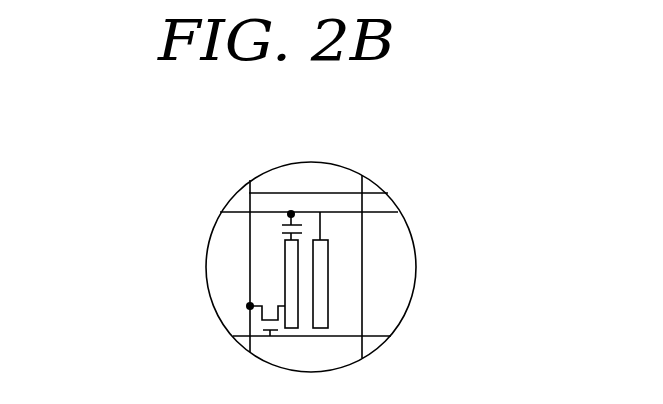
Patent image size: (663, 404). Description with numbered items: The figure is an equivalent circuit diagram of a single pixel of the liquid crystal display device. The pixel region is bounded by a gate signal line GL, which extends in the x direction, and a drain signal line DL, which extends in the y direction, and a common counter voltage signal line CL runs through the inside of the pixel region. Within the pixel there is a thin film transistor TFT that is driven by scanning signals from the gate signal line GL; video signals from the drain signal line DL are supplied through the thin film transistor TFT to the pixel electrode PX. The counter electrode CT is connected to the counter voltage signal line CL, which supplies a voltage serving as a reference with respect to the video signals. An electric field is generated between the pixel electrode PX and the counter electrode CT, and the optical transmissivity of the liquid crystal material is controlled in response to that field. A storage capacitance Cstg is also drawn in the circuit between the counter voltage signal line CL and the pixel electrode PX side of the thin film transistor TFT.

The drain signal line DL is at (367, 182).
The counter voltage signal line CL is at (383, 213).
The gate signal line GL is at (328, 337).
The storage capacitor Cstg is at (277, 229).
The pixel electrode PX is at (283, 263).
The counter electrode CT is at (328, 277).
The thin film transistor TFT is at (253, 321).